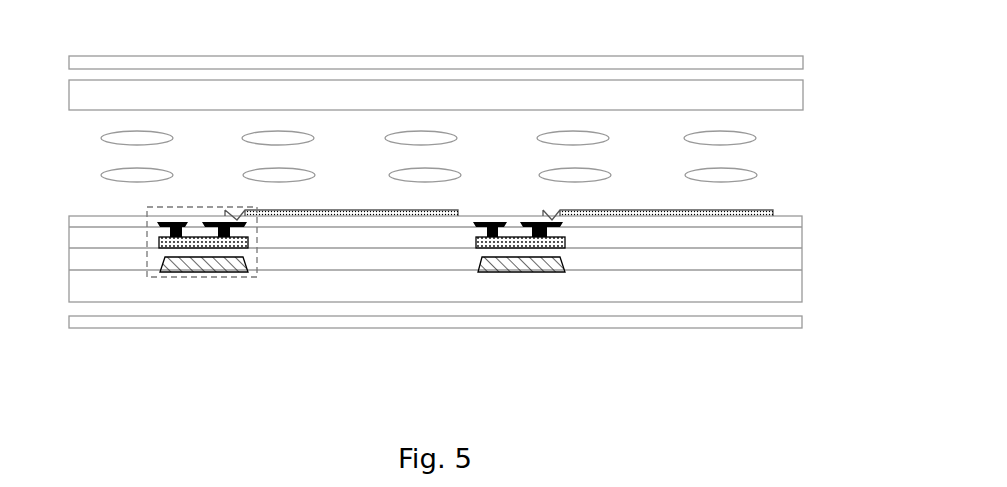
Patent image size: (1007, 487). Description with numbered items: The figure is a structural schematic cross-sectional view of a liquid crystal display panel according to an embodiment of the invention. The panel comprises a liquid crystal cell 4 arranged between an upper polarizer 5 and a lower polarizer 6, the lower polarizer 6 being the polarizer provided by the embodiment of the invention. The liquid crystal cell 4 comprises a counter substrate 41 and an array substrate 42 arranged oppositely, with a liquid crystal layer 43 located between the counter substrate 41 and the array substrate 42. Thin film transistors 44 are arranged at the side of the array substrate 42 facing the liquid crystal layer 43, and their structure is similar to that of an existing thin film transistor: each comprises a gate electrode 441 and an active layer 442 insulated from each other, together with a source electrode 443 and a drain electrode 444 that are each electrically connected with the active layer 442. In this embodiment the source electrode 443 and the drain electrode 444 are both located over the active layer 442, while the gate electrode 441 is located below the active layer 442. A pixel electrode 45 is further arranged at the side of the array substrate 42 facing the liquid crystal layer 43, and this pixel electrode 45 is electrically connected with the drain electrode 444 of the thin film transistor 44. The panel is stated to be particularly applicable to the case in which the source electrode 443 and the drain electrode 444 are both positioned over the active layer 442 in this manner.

The liquid crystal cell 4 is at (813, 82).
The upper polarizer 5 is at (436, 34).
The lower polarizer 6 is at (440, 345).
The counter substrate 41 is at (420, 115).
The array substrate 42 is at (418, 259).
The liquid crystal layer 43 is at (395, 178).
The thin film transistor 44 is at (202, 215).
The pixel electrode 45 is at (499, 186).
The gate electrode 441 is at (560, 309).
The active layer 442 is at (520, 299).
The source electrode 443 is at (463, 207).
The drain electrode 444 is at (561, 207).